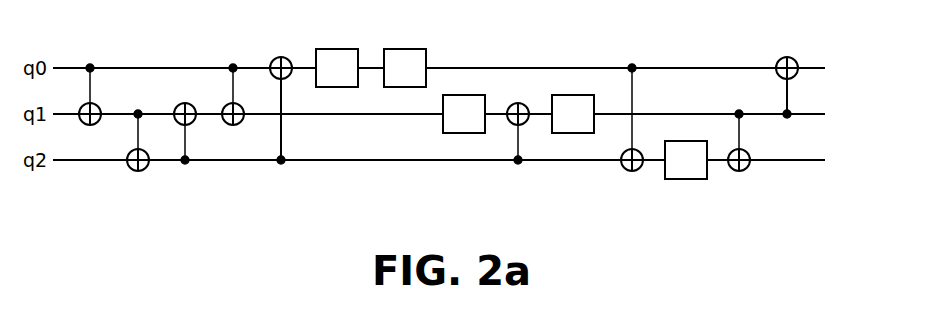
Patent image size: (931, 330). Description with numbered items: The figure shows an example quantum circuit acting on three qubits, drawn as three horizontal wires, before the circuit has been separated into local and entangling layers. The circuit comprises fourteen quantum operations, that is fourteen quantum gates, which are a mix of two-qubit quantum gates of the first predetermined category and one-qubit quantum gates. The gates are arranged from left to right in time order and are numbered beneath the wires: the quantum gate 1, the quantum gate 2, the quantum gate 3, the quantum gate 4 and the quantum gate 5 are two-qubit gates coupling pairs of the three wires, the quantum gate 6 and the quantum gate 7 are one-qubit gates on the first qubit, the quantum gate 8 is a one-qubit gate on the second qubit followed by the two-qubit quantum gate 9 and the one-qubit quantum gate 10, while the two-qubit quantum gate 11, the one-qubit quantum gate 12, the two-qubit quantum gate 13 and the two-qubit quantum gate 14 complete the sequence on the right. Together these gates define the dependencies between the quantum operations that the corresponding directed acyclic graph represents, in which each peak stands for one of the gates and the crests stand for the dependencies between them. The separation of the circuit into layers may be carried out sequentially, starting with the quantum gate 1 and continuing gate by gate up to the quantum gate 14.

The quantum gate 1 is at (90, 136).
The quantum gate 2 is at (138, 159).
The quantum gate 3 is at (185, 155).
The quantum gate 4 is at (233, 136).
The quantum gate 5 is at (281, 132).
The quantum gate 6 is at (337, 128).
The quantum gate 7 is at (405, 128).
The quantum gate 8 is at (464, 151).
The quantum gate 9 is at (518, 155).
The quantum gate 10 is at (573, 151).
The quantum gate 11 is at (632, 136).
The quantum gate 12 is at (686, 174).
The quantum gate 13 is at (739, 159).
The quantum gate 14 is at (787, 132).